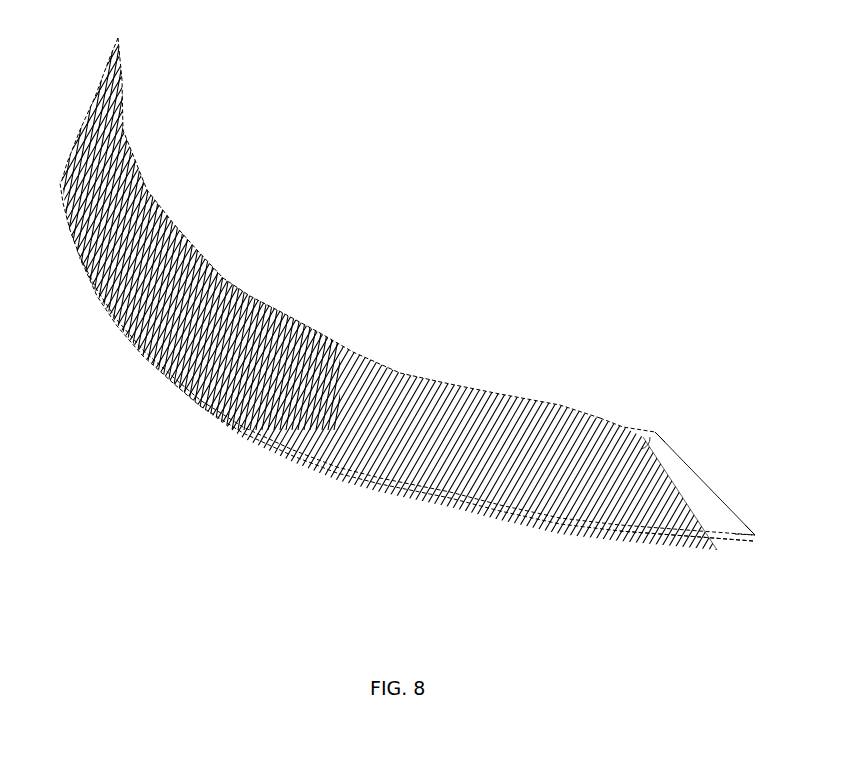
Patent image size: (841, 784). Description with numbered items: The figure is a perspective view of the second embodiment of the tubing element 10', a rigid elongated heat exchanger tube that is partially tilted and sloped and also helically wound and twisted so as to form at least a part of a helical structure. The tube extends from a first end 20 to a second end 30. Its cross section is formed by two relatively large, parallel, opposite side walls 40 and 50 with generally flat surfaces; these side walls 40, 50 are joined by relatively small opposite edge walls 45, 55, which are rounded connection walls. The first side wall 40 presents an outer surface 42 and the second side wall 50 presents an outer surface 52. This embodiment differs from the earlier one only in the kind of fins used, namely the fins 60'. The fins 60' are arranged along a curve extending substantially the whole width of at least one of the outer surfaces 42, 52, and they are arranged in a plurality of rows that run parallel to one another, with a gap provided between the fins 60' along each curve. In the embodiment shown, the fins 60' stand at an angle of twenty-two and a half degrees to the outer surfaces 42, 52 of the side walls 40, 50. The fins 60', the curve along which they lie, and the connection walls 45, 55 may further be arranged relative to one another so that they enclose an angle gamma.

The tubing element 10' is at (407, 286).
The first end 20 is at (86, 116).
The fins 60' is at (420, 314).
The edge wall 45 is at (628, 427).
The side wall 40 is at (657, 440).
The outer surface 42 is at (667, 463).
The second end 30 is at (717, 497).
The side wall 50 is at (754, 541).
The outer surface 52 is at (725, 544).
The edge wall 55 is at (473, 507).